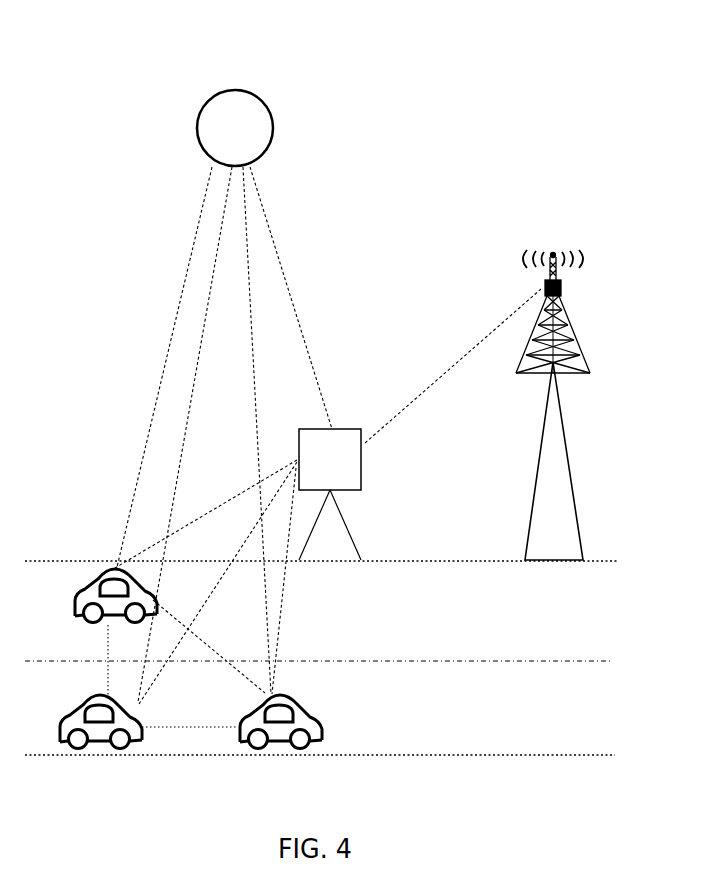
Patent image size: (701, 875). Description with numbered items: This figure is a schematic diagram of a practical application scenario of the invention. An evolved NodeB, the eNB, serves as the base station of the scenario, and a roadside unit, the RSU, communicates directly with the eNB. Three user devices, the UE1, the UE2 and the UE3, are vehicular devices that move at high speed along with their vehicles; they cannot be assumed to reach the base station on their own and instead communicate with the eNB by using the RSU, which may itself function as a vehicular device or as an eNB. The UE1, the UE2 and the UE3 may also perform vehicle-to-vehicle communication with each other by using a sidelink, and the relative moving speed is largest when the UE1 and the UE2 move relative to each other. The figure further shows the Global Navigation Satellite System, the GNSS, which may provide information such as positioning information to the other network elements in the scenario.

The Global Navigation Satellite System GNSS is at (235, 113).
The evolved NodeB eNB is at (553, 392).
The roadside unit RSU is at (340, 475).
The element UE1 is at (101, 743).
The element UE2 is at (281, 743).
The element UE3 is at (91, 596).